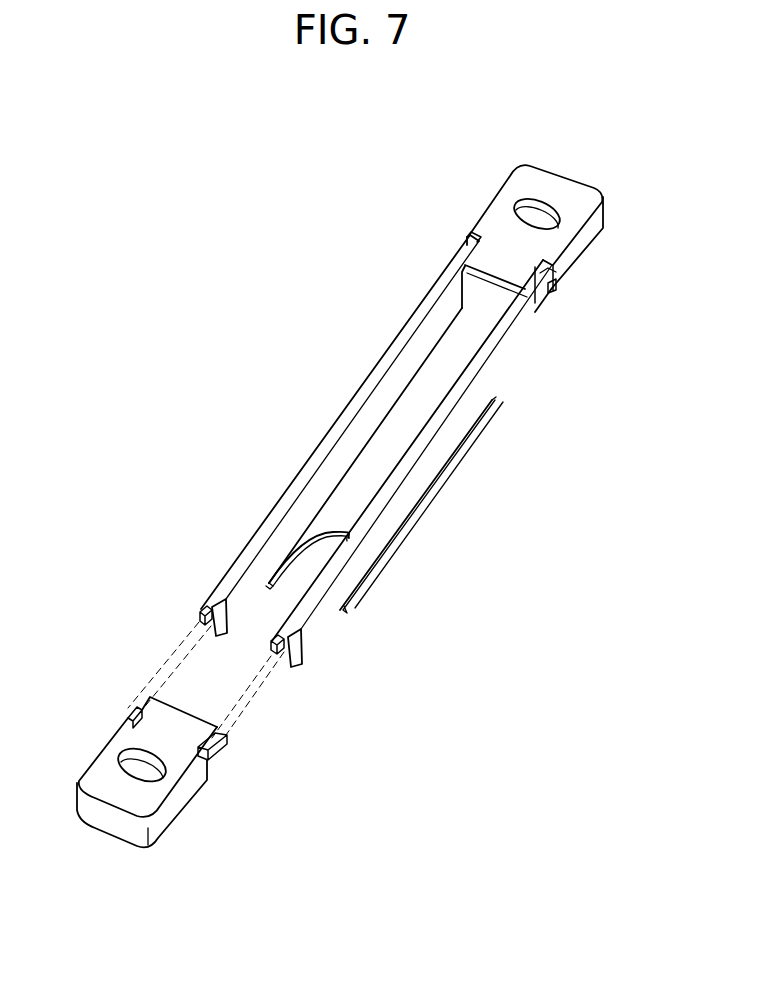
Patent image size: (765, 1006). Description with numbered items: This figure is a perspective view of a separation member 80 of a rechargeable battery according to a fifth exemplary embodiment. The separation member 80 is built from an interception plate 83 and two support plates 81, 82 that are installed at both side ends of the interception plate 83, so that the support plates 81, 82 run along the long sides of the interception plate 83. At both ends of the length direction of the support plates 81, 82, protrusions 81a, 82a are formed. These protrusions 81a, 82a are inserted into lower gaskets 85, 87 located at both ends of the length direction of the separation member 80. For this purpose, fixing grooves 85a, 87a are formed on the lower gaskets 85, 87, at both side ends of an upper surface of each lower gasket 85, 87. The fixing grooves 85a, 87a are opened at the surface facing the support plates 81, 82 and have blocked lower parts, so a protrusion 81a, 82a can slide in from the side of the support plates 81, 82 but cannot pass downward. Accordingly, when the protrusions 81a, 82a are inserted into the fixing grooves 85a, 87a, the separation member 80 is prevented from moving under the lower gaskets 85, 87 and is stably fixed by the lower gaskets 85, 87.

The separation member 80 is at (367, 286).
The support plate 81 is at (373, 379).
The protrusion 81a is at (204, 608).
The support plate 82 is at (477, 363).
The protrusion 82a is at (282, 640).
The interception plate 83 is at (375, 464).
The lower gasket 85 is at (183, 802).
The fixing groove 85a is at (134, 706).
The lower gasket 87 is at (580, 245).
The fixing groove 87a is at (466, 244).